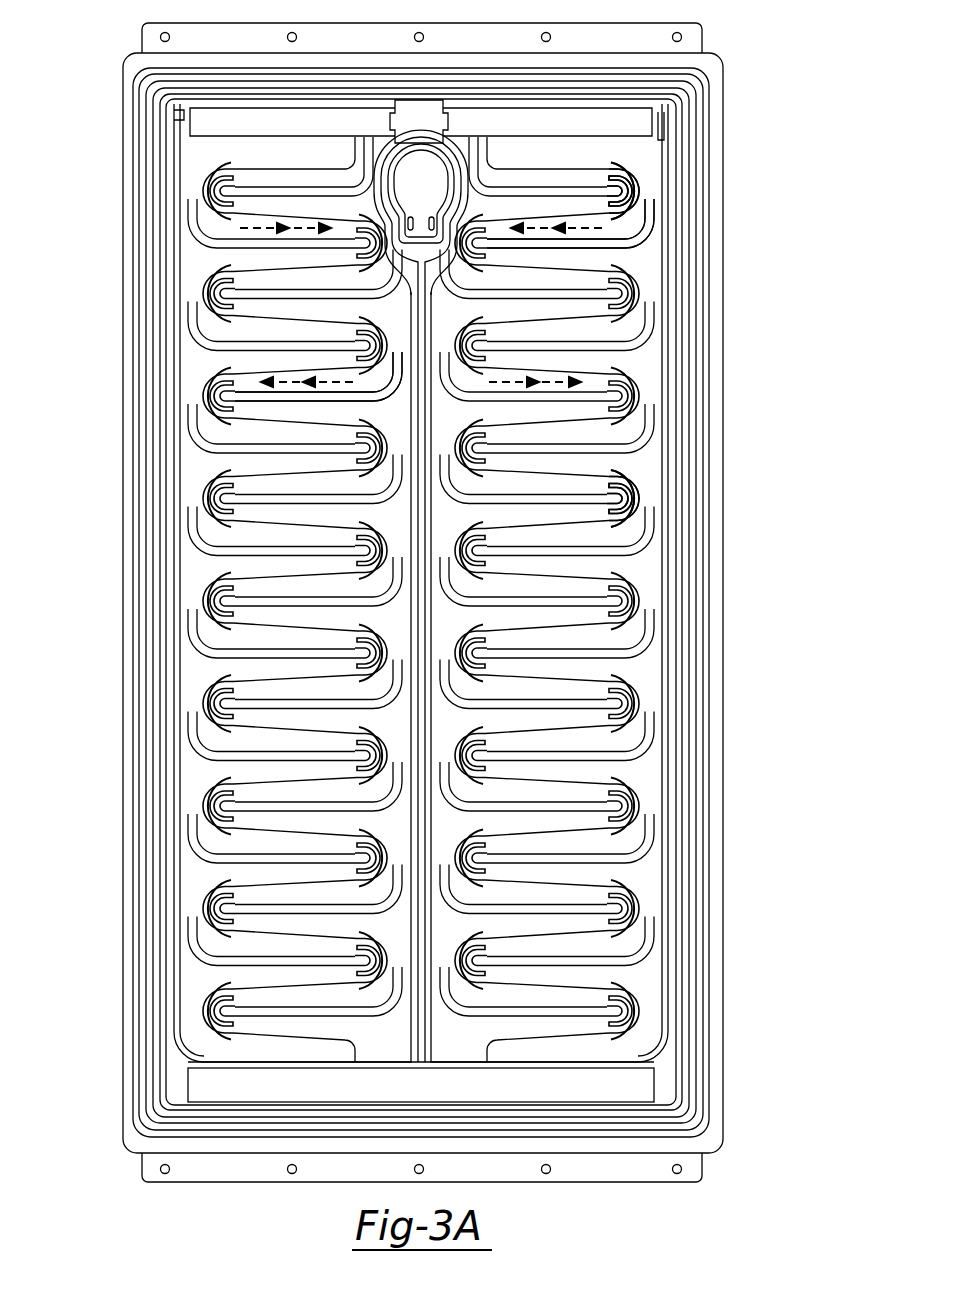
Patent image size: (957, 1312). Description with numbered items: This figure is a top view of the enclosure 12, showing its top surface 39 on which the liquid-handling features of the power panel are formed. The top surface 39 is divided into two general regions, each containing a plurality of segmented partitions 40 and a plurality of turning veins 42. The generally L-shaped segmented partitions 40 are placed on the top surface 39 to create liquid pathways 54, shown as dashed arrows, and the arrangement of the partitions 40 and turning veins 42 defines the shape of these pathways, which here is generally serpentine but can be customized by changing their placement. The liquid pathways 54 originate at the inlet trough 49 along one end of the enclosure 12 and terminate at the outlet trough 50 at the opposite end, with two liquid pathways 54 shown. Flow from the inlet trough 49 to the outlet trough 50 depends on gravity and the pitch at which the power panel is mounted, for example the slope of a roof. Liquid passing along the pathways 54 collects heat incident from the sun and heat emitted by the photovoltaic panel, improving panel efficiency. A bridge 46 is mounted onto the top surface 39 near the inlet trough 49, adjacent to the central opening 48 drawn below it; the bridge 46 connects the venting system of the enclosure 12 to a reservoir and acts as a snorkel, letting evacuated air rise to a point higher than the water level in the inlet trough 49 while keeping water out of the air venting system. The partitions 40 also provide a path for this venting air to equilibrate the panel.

The enclosure 12 is at (724, 546).
The top surface 39 is at (190, 567).
The segmented partitions 40 is at (666, 240).
The turning veins 42 is at (640, 154).
The bridge 46 is at (447, 100).
The inlet header opening 48 is at (367, 191).
The inlet trough 49 is at (198, 116).
The outlet trough 50 is at (190, 1083).
The liquid pathways 54 is at (302, 232).